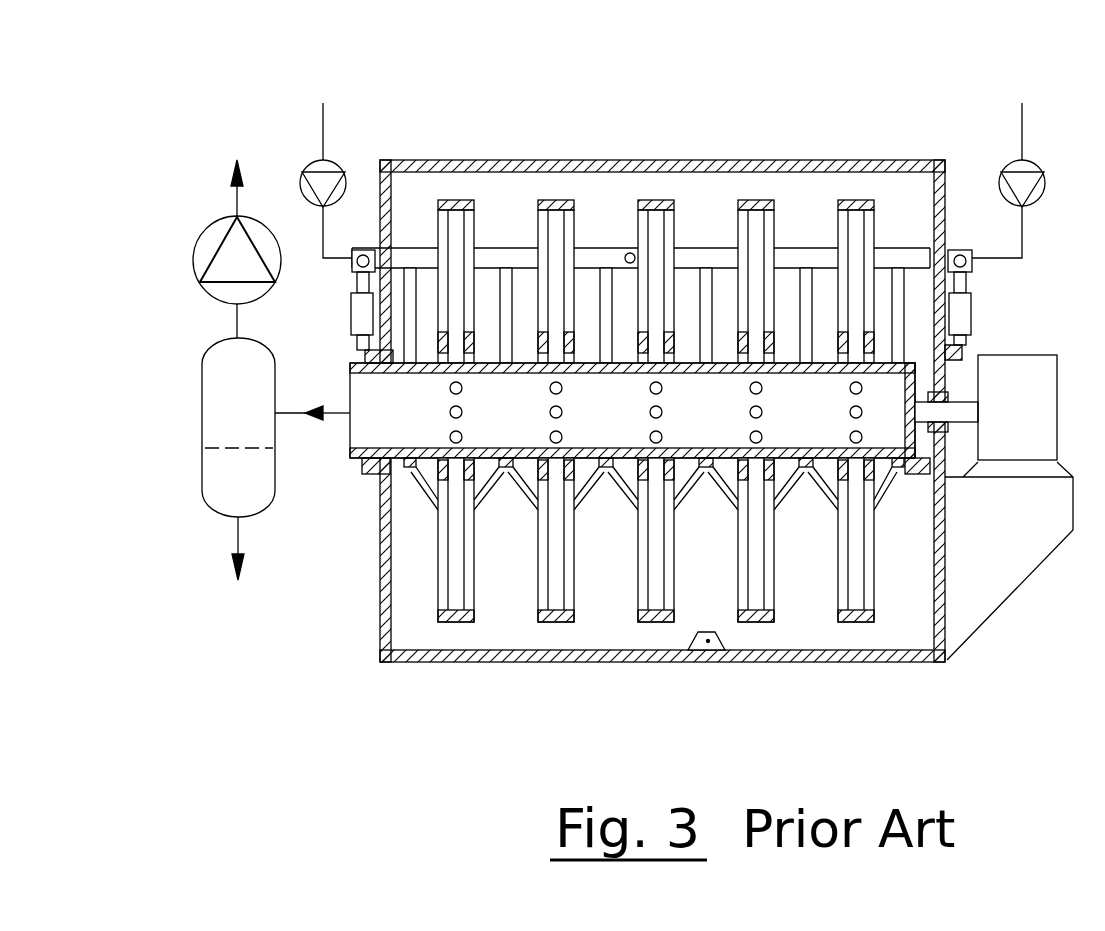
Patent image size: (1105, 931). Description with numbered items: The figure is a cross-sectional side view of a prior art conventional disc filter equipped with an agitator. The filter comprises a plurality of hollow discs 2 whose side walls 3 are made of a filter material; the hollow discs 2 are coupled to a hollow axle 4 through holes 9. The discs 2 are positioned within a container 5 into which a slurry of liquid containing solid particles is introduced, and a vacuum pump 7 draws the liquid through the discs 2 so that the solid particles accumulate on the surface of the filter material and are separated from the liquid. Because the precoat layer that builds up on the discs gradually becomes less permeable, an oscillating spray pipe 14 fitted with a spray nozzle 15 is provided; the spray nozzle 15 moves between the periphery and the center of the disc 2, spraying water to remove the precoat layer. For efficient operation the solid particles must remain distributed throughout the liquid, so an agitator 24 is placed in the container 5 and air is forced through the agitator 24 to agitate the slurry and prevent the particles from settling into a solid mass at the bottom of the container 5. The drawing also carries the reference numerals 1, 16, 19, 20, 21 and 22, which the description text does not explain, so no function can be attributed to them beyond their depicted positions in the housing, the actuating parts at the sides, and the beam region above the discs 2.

The housing 1 is at (503, 660).
The hollow disc 2 is at (757, 198).
The side wall of filter material 3 is at (640, 230).
The hollow axle 4 is at (357, 460).
The container 5 is at (380, 621).
The vacuum pump 7 is at (216, 222).
The holes 9 is at (650, 435).
The oscillating spray pipe 14 is at (418, 348).
The spray nozzle 15 is at (606, 500).
The actuating cylinder 16 is at (352, 318).
The bearing 19 is at (590, 245).
The crossbeam 20 is at (417, 252).
The crossbeam end 21 is at (893, 255).
The valve 22 is at (332, 160).
The agitator 24 is at (708, 652).